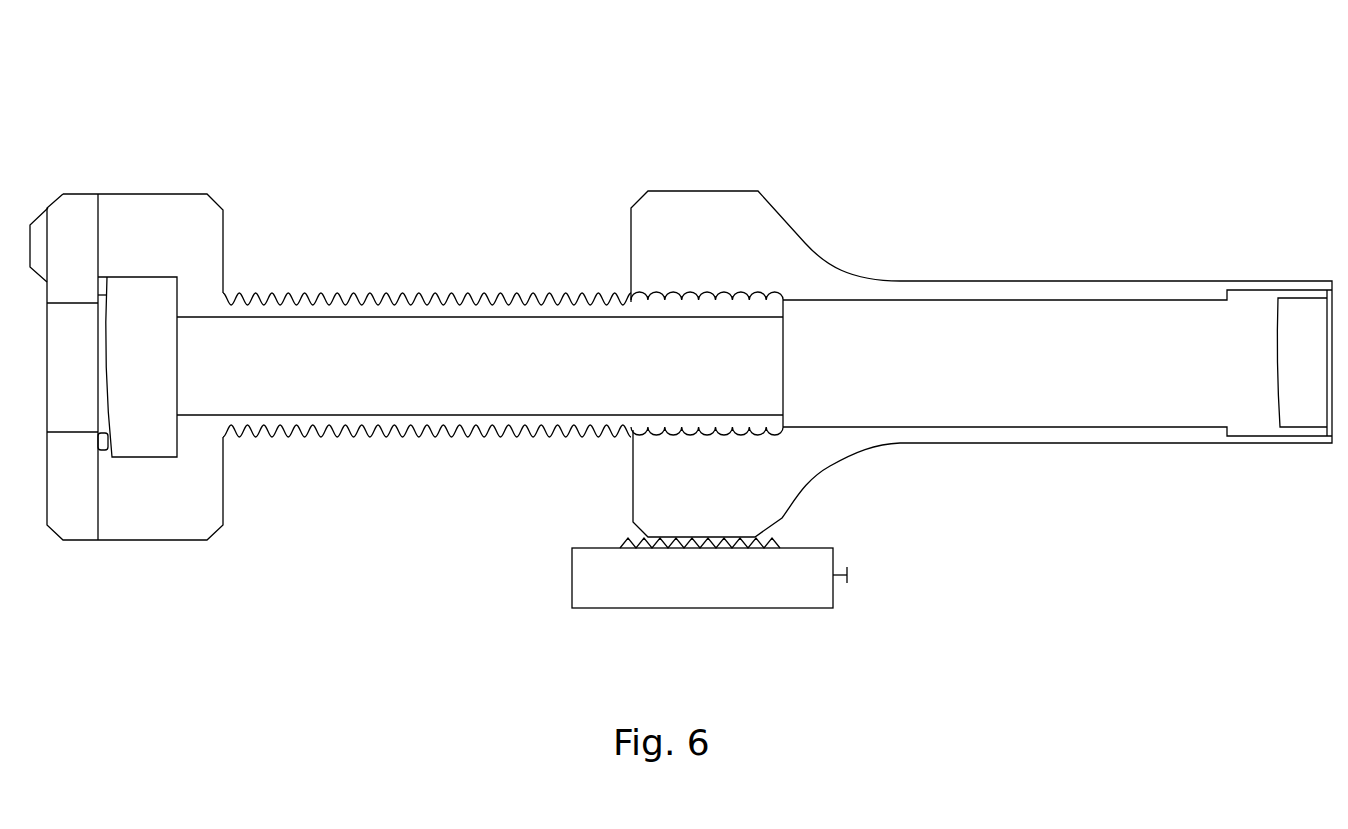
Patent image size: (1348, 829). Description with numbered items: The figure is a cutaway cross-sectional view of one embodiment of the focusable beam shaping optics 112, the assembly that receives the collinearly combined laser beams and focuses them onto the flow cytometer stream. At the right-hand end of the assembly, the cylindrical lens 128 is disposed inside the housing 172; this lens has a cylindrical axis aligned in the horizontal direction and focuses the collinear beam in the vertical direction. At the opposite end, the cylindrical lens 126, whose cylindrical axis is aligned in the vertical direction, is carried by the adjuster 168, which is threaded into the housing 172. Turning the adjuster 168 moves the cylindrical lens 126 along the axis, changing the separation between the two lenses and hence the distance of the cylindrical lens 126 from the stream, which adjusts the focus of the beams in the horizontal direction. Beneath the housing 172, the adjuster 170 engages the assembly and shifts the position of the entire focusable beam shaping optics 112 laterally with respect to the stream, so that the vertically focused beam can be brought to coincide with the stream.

The focusable beam shaping optics 112 is at (833, 117).
The cylindrical lens 126 is at (133, 303).
The cylindrical lens 128 is at (1302, 310).
The adjuster 168 is at (263, 445).
The adjuster 170 is at (858, 575).
The housing 172 is at (765, 237).